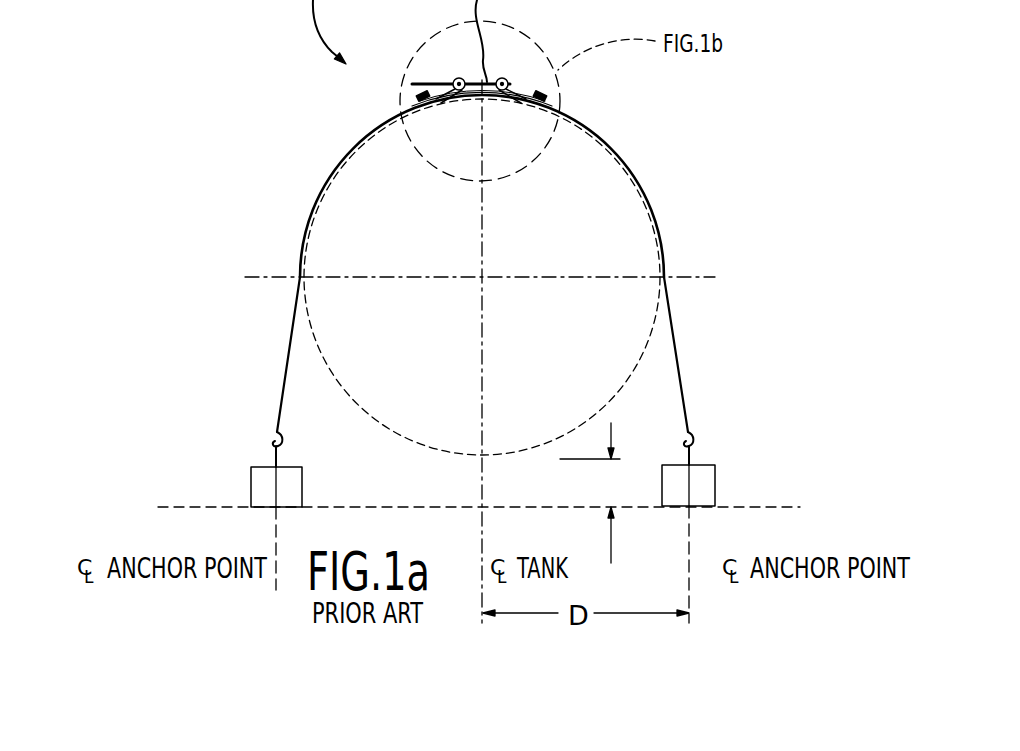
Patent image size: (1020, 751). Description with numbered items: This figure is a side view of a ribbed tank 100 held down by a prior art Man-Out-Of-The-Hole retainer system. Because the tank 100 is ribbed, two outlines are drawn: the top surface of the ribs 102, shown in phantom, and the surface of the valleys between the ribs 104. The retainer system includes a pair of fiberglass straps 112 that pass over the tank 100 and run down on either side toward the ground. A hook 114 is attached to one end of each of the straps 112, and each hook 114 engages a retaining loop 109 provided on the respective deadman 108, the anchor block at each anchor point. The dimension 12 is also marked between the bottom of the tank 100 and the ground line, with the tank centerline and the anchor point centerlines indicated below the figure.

The tank 100 is at (570, 223).
The top surface of the ribs 102 is at (613, 400).
The surface of the valleys between the ribs 104 is at (317, 200).
The deadman 108 is at (714, 488).
The retaining loop 109 is at (272, 465).
The fiberglass straps 112 is at (288, 343).
The hook 114 is at (283, 437).
The distance between tank bottom and ground 12 is at (594, 493).